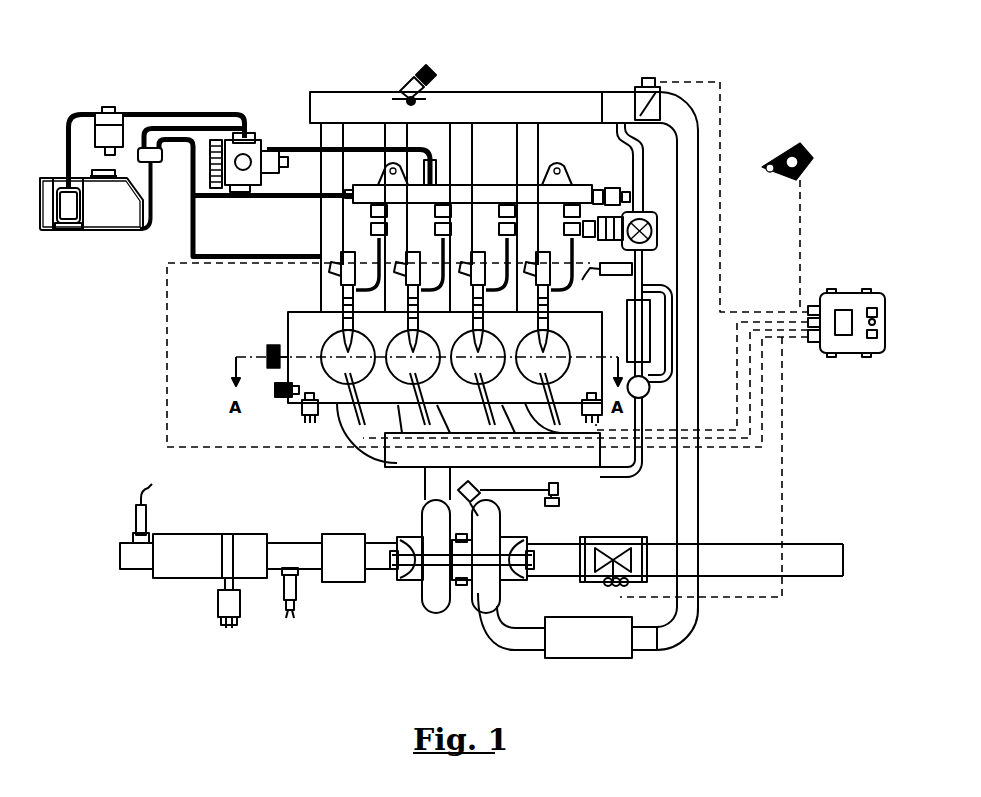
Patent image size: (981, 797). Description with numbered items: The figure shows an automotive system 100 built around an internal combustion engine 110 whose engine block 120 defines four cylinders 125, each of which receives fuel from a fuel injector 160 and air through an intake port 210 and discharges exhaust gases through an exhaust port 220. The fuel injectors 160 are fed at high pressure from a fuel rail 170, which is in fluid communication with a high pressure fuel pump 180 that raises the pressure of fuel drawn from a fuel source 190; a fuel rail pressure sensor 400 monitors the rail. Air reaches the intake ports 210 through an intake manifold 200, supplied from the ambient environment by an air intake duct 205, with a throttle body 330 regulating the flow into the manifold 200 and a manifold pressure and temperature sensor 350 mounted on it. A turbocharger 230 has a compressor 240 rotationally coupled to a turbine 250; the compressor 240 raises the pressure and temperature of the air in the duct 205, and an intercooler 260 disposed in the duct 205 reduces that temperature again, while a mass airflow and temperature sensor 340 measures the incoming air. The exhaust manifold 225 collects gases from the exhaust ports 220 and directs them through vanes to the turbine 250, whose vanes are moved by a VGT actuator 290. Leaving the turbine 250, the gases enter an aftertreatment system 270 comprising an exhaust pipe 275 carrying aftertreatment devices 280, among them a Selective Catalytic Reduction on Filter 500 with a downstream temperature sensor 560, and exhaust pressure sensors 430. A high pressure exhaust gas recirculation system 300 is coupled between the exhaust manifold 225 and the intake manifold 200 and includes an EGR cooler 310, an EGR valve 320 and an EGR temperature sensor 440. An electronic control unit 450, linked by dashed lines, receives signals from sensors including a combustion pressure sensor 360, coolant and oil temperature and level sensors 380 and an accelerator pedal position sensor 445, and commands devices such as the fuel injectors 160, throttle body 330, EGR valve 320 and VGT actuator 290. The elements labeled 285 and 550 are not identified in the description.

The automotive system 100 is at (227, 78).
The internal combustion engine 110 is at (550, 82).
The engine block 120 is at (288, 320).
The cylinder 125 is at (568, 330).
The fuel injector 160 is at (350, 293).
The fuel rail 170 is at (355, 200).
The high pressure fuel pump 180 is at (262, 137).
The fuel source 190 is at (113, 217).
The intake manifold 200 is at (463, 110).
The air intake duct 205 is at (690, 517).
The intake port 210 is at (330, 313).
The exhaust port 220 is at (338, 415).
The exhaust manifold 225 is at (413, 457).
The turbocharger 230 is at (458, 588).
The compressor 240 is at (488, 583).
The turbine 250 is at (433, 583).
The intercooler 260 is at (612, 645).
The aftertreatment system 270 is at (227, 522).
The exhaust pipe 275 is at (133, 558).
The exhaust aftertreatment device 280 is at (338, 562).
The catalyst 285 is at (250, 558).
The VGT actuator 290 is at (480, 495).
The high pressure exhaust gas recirculation system 300 is at (613, 482).
The EGR cooler 310 is at (640, 347).
The EGR valve 320 is at (643, 213).
The throttle body 330 is at (650, 78).
The mass airflow and temperature sensor 340 is at (613, 583).
The manifold pressure and temperature sensor 350 is at (407, 78).
The combustion pressure sensor 360 is at (362, 417).
The coolant and oil temperature and level sensors 380 is at (302, 410).
The fuel rail pressure sensor 400 is at (627, 192).
The exhaust pressure sensor 430 is at (227, 628).
The EGR temperature sensor 440 is at (636, 263).
The accelerator pedal position sensor 445 is at (805, 150).
The electronic control unit 450 is at (852, 292).
The Selective Catalytic Reduction on Filter 500 is at (178, 558).
The temperature sensor 550 is at (288, 618).
The temperature sensor downstream of the SCRF 560 is at (135, 512).